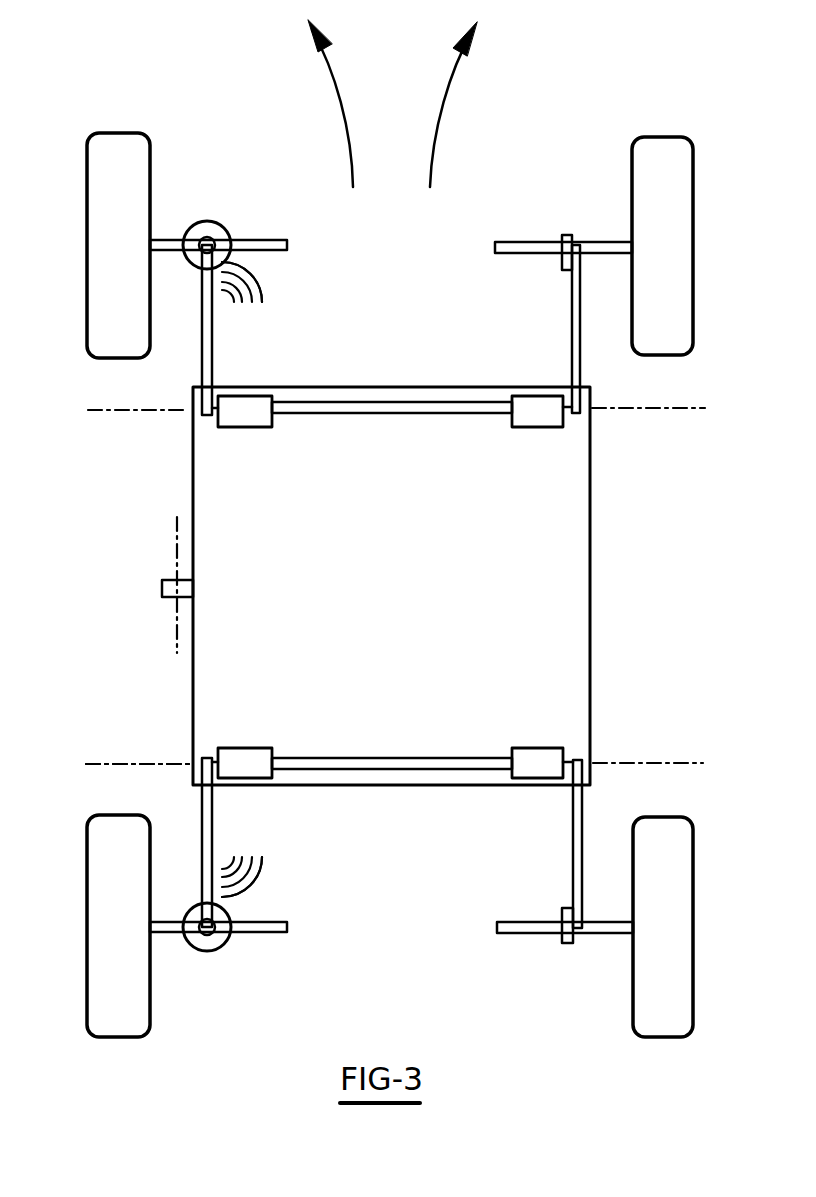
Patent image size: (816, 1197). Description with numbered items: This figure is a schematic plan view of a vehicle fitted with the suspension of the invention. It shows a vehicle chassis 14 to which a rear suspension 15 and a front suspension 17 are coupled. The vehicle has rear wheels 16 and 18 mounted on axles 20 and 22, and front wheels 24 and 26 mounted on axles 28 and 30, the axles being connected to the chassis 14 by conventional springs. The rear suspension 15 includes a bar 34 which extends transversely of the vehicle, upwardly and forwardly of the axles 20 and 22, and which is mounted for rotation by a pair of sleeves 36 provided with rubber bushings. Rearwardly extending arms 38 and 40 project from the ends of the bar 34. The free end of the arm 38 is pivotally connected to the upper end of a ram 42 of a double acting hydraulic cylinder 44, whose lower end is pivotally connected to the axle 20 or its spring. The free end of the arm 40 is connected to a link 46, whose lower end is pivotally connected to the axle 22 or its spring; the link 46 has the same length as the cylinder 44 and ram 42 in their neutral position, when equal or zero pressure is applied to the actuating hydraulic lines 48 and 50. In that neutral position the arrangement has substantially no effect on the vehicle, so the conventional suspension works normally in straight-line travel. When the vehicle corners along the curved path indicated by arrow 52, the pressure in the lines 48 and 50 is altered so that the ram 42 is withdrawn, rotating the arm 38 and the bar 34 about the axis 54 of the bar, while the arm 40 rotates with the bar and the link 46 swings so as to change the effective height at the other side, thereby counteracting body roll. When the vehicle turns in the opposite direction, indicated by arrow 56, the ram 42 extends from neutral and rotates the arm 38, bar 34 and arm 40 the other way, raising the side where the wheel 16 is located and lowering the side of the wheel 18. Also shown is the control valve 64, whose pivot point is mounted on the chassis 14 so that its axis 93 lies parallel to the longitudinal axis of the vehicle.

The vehicle chassis 14 is at (592, 648).
The rear suspension 15 is at (100, 727).
The rear wheel 16 is at (102, 956).
The front suspension 17 is at (138, 428).
The rear wheel 18 is at (678, 966).
The axle 20 is at (290, 936).
The axle 22 is at (497, 936).
The front wheel 24 is at (100, 200).
The front wheel 26 is at (678, 178).
The axle 28 is at (262, 240).
The axle 30 is at (522, 241).
The bar 34 is at (400, 415).
The sleeves 36 is at (244, 429).
The arm 38 is at (200, 346).
The arm 40 is at (570, 330).
The ram 42 is at (188, 940).
The double acting hydraulic cylinder 44 is at (217, 222).
The link 46 is at (556, 262).
The hydraulic line 48 is at (262, 283).
The hydraulic line 50 is at (225, 288).
The arrow 52 is at (338, 90).
The axis 54 is at (143, 762).
The arrow 56 is at (443, 113).
The control valve 64 is at (158, 607).
The axis 93 is at (176, 531).